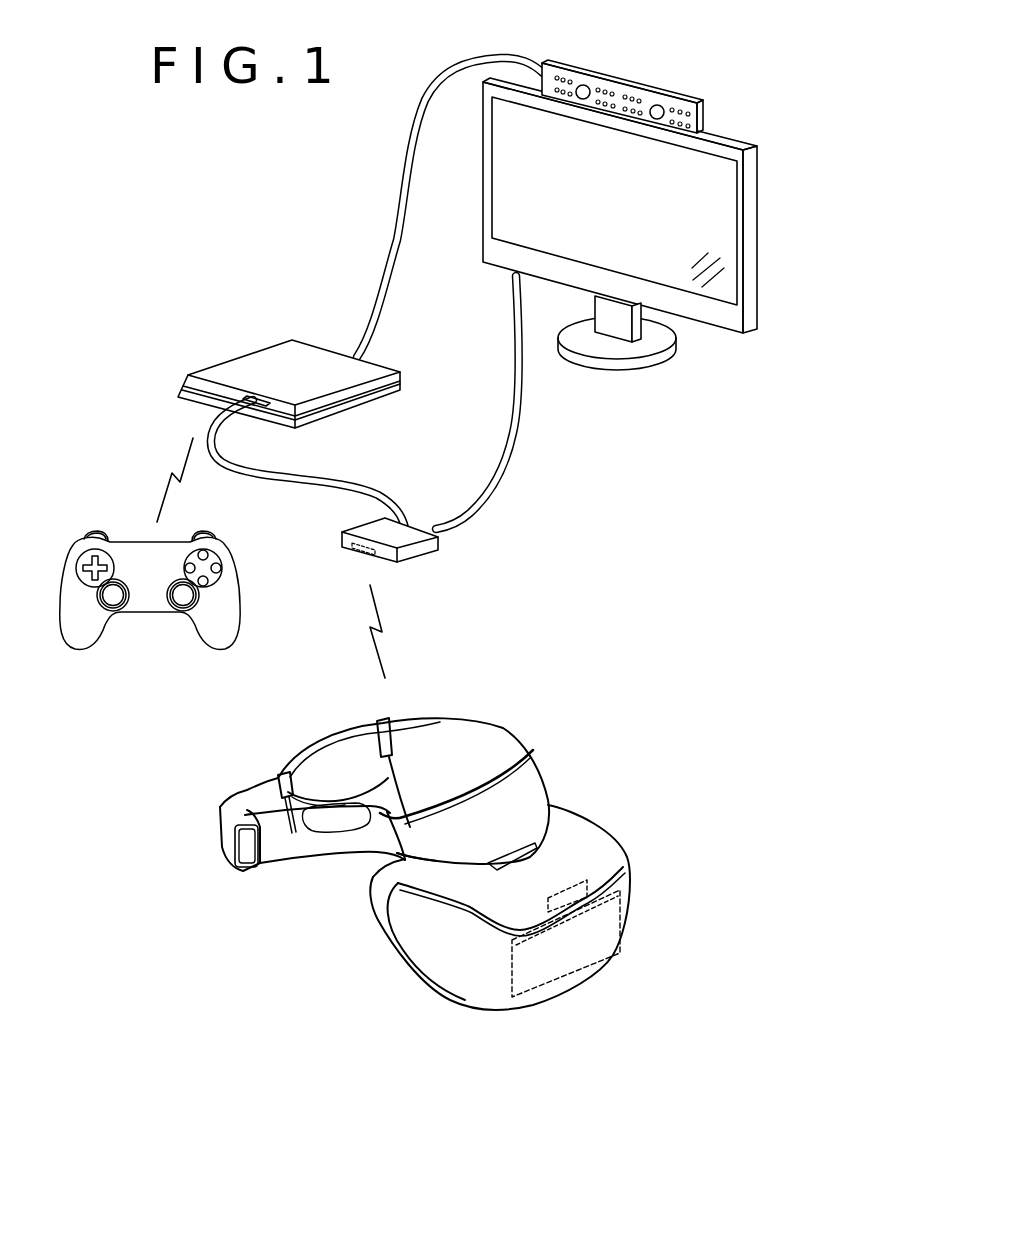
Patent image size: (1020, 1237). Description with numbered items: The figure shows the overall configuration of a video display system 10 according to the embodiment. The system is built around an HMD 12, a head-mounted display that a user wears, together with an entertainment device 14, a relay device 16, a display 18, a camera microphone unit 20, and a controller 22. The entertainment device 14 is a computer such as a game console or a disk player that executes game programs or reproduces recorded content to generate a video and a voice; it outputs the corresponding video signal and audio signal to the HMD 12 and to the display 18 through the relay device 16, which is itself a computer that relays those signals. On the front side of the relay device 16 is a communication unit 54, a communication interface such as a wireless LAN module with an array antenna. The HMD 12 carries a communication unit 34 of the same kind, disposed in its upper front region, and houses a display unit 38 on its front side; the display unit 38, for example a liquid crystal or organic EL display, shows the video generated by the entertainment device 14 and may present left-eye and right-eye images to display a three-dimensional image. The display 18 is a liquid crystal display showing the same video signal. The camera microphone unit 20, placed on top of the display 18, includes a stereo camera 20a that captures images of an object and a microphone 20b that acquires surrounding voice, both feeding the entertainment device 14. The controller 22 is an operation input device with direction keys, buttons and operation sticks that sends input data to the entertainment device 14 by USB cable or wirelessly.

The video display system 10 is at (506, 897).
The HMD 12 is at (533, 932).
The entertainment device 14 is at (240, 358).
The relay device 16 is at (419, 562).
The display 18 is at (758, 238).
The camera microphone unit 20 is at (648, 92).
The camera 20a is at (583, 99).
The microphone 20b is at (614, 78).
The controller 22 is at (240, 601).
The communication unit 34 is at (587, 880).
The display unit 38 is at (630, 905).
The communication unit 54 is at (390, 563).